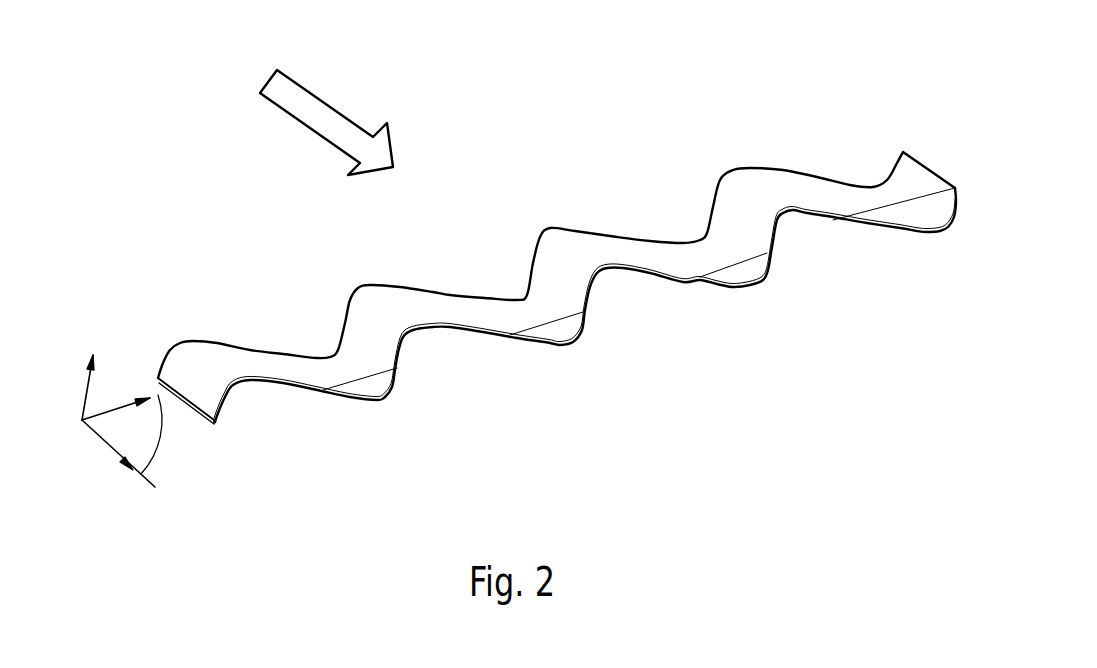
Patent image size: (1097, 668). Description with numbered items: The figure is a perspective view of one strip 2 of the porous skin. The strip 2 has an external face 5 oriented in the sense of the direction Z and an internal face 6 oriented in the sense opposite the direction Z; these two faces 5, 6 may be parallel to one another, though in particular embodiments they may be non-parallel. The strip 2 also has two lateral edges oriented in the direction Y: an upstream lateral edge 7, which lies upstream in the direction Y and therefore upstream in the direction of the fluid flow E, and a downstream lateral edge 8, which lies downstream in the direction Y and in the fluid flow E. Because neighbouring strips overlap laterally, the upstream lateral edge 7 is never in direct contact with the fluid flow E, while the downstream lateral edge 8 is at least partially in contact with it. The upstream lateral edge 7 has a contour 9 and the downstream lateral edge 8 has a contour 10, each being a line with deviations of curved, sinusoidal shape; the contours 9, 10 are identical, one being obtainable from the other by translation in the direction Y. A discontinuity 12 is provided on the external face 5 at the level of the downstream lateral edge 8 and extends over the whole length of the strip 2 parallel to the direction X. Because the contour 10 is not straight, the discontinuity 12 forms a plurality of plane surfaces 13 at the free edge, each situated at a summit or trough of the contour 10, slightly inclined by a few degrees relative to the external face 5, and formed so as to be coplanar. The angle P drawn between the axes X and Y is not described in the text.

The strip 2 is at (557, 277).
The external face 5 is at (807, 187).
The internal face 6 is at (813, 233).
The upstream lateral edge 7 is at (553, 217).
The downstream lateral edge 8 is at (750, 293).
The contour 9 is at (622, 230).
The contour 10 is at (660, 277).
The discontinuity 12 is at (320, 407).
The plane surface 13 is at (557, 332).
The fluid flow E is at (307, 127).
The direction X is at (110, 407).
The direction Y is at (97, 435).
The direction Z is at (85, 398).
The angle P is at (162, 434).